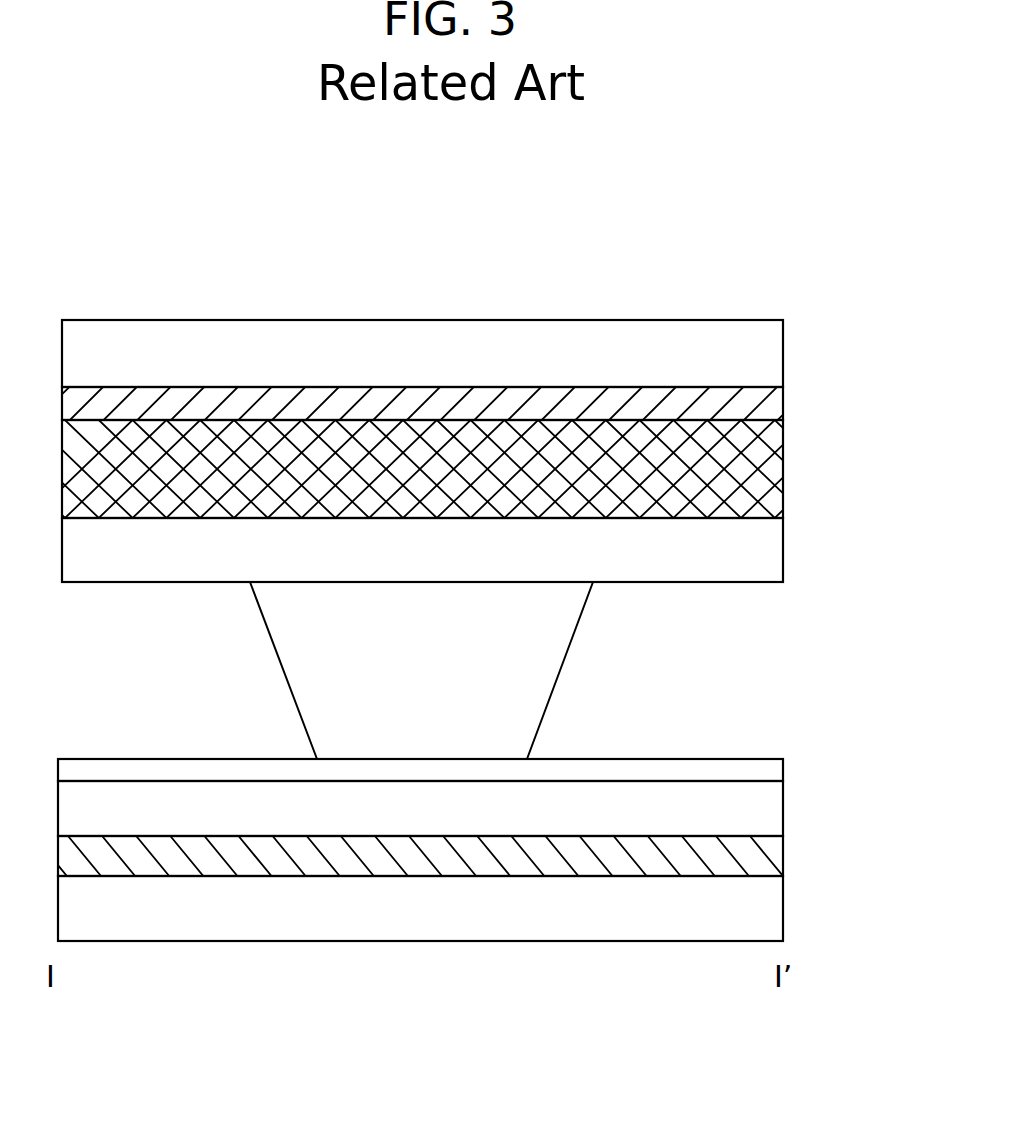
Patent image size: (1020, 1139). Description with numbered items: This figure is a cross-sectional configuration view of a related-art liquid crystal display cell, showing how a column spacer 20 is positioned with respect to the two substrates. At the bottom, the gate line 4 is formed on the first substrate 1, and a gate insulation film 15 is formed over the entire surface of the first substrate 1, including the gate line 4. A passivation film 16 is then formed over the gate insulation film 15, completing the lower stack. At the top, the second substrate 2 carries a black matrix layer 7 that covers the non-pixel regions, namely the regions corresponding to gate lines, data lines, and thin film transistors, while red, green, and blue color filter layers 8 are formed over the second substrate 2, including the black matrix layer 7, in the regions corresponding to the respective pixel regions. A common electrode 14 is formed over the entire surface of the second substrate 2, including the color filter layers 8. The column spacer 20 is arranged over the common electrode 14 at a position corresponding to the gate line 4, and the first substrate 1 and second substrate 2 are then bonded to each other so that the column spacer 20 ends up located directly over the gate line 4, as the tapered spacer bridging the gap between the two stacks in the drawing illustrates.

The first substrate 1 is at (768, 908).
The second substrate 2 is at (765, 356).
The gate line 4 is at (768, 858).
The black matrix layer 7 is at (765, 408).
The color filter layers 8 is at (765, 483).
The common electrode 14 is at (762, 546).
The gate insulation film 15 is at (768, 816).
The passivation film 16 is at (768, 773).
The column spacer 20 is at (547, 674).